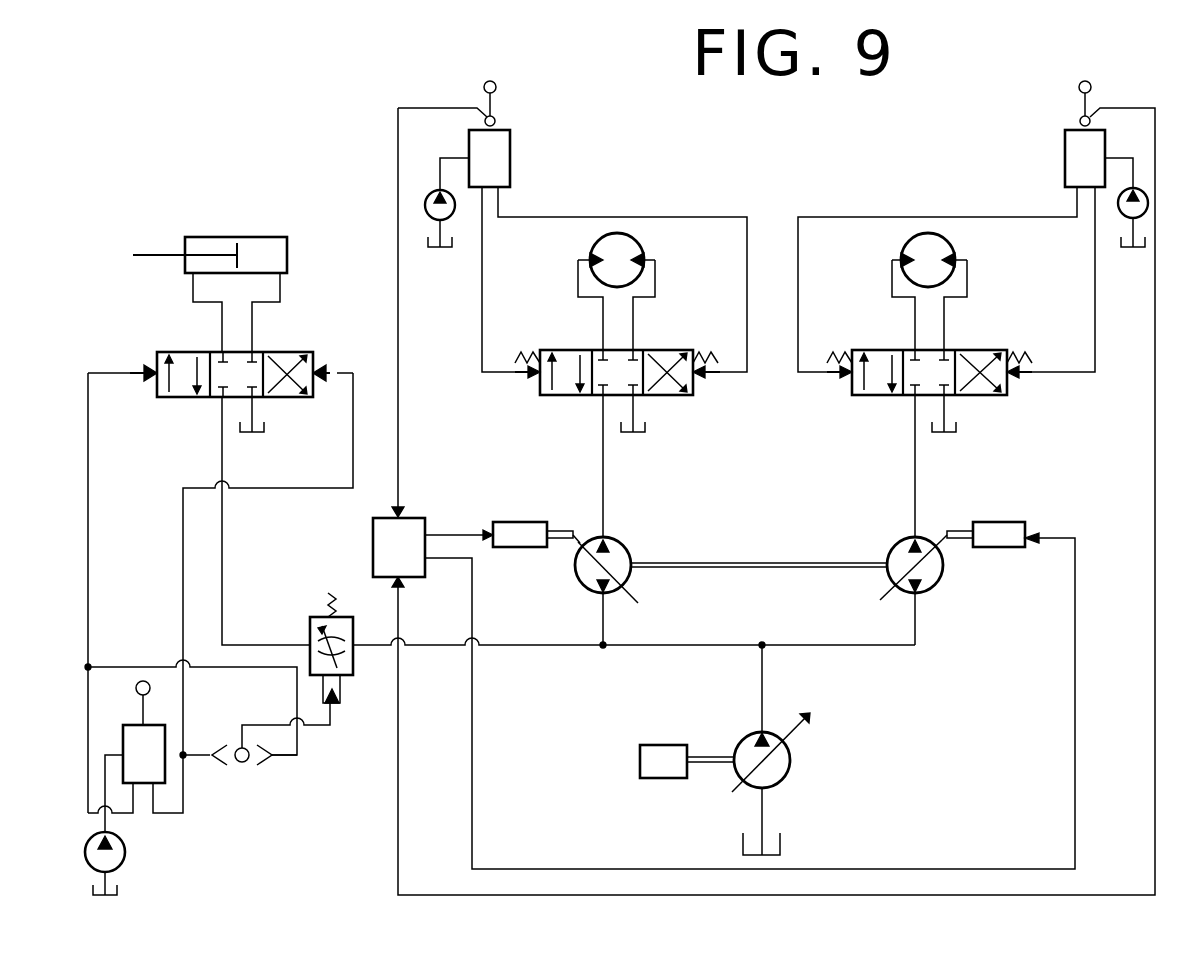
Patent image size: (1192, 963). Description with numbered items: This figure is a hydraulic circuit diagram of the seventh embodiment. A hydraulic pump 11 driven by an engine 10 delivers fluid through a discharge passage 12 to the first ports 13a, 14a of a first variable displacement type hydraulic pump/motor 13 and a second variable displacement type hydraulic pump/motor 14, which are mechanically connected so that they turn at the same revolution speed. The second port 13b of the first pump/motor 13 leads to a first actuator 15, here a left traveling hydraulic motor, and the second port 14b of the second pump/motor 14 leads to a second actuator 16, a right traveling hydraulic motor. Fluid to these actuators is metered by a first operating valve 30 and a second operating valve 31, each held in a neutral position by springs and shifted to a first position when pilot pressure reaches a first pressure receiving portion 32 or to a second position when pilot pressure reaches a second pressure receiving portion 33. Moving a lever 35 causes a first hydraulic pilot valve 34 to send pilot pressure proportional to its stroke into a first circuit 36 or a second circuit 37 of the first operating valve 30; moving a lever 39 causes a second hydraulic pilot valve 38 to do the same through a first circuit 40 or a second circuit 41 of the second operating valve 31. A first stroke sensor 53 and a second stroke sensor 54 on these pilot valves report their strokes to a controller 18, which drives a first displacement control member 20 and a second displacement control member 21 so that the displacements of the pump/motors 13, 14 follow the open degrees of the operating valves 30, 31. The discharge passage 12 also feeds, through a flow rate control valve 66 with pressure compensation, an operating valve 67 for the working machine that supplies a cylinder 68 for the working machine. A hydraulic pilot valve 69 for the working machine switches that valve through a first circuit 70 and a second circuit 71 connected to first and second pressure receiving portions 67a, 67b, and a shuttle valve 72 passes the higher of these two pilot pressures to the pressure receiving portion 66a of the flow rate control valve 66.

The engine 10 is at (645, 747).
The hydraulic pump 11 is at (772, 766).
The discharge passage 12 is at (762, 690).
The first variable displacement type hydraulic pump/motor 13 is at (628, 550).
The first port of the first variable displacement type hydraulic pump/motor 13a is at (593, 592).
The second port of the first variable displacement type hydraulic pump/motor 13b is at (607, 540).
The second variable displacement type hydraulic pump/motor 14 is at (940, 573).
The first port of the second variable displacement type hydraulic pump/motor 14a is at (920, 593).
The second port of the second variable displacement type hydraulic pump/motor 14b is at (912, 540).
The first actuator 15 is at (643, 245).
The second actuator 16 is at (955, 245).
The controller 18 is at (413, 532).
The first displacement control member 20 is at (512, 532).
The second displacement control member 21 is at (1007, 522).
The first operating valve 30 is at (690, 348).
The second operating valve 31 is at (1003, 347).
The first pressure receiving portion 32 is at (512, 368).
The second pressure receiving portion 33 is at (725, 362).
The first hydraulic pilot valve 34 is at (505, 173).
The lever 35 is at (497, 89).
The first circuit 36 is at (482, 263).
The second circuit 37 is at (675, 217).
The second hydraulic pilot valve 38 is at (1072, 170).
The lever 39 is at (1079, 87).
The first circuit 40 is at (853, 217).
The second circuit 41 is at (1115, 307).
The first stroke sensor 53 is at (497, 120).
The second stroke sensor 54 is at (1079, 121).
The flow rate control valve with pressure compensation 66 is at (308, 618).
The pressure receiving portion of the flow rate control valve 66a is at (333, 707).
The operating valve for the working machine 67 is at (313, 352).
The first pressure receiving portion of the operating valve for the working machine 67a is at (130, 372).
The second pressure receiving portion of the operating valve for the working machine 67b is at (337, 373).
The cylinder for the working machine 68 is at (287, 252).
The hydraulic pilot valve for the working machine 69 is at (168, 773).
The first circuit 70 is at (90, 483).
The second circuit 71 is at (273, 488).
The shuttle valve 72 is at (225, 740).